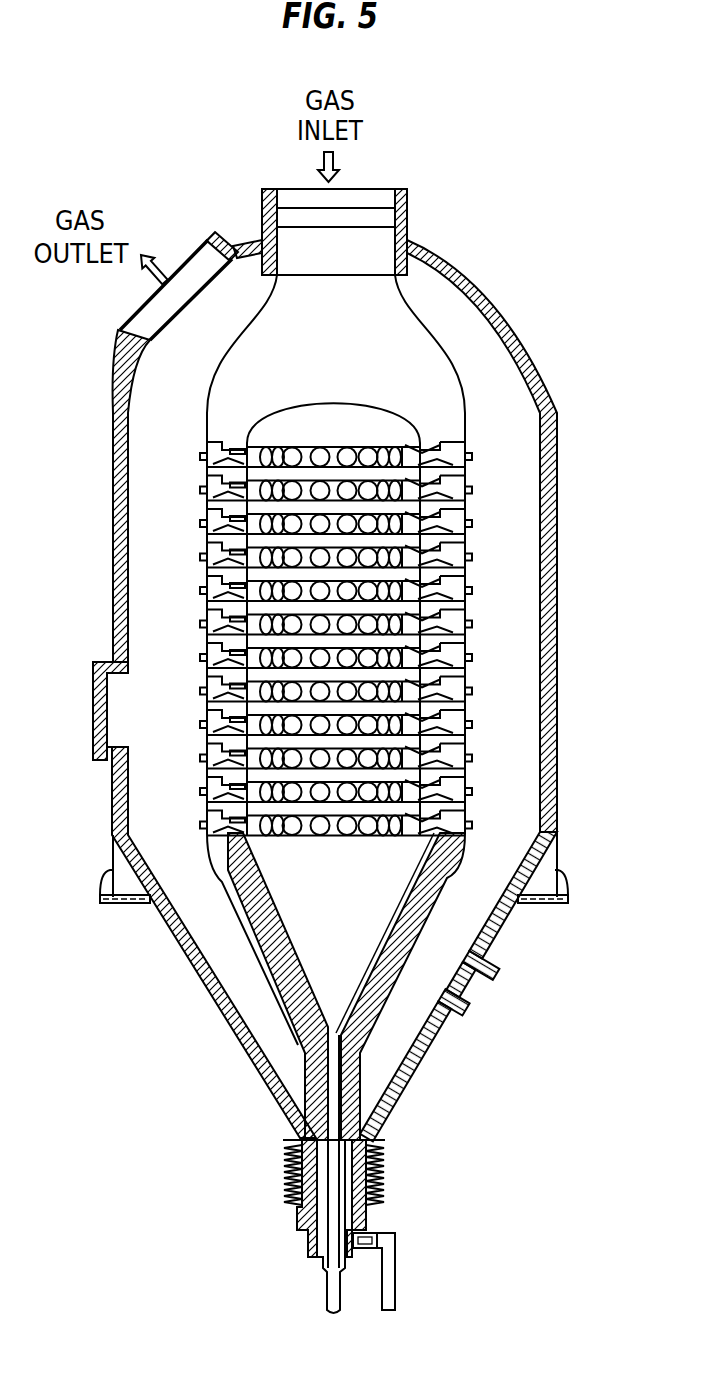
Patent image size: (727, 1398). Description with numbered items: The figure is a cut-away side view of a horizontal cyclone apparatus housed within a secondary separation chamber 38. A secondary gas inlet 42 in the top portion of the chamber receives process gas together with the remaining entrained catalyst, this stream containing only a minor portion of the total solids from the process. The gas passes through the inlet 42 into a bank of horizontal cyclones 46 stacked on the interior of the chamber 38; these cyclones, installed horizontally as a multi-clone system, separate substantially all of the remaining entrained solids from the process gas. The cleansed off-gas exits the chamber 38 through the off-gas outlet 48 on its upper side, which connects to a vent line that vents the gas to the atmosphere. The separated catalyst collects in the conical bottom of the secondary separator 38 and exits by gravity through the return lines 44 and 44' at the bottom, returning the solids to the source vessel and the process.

The secondary separation chamber 38 is at (112, 530).
The secondary gas inlet 42 is at (408, 196).
The return line 44 is at (330, 1247).
The return line 44' is at (399, 1293).
The horizontal cyclones 46 is at (480, 563).
The off-gas outlet 48 is at (195, 250).